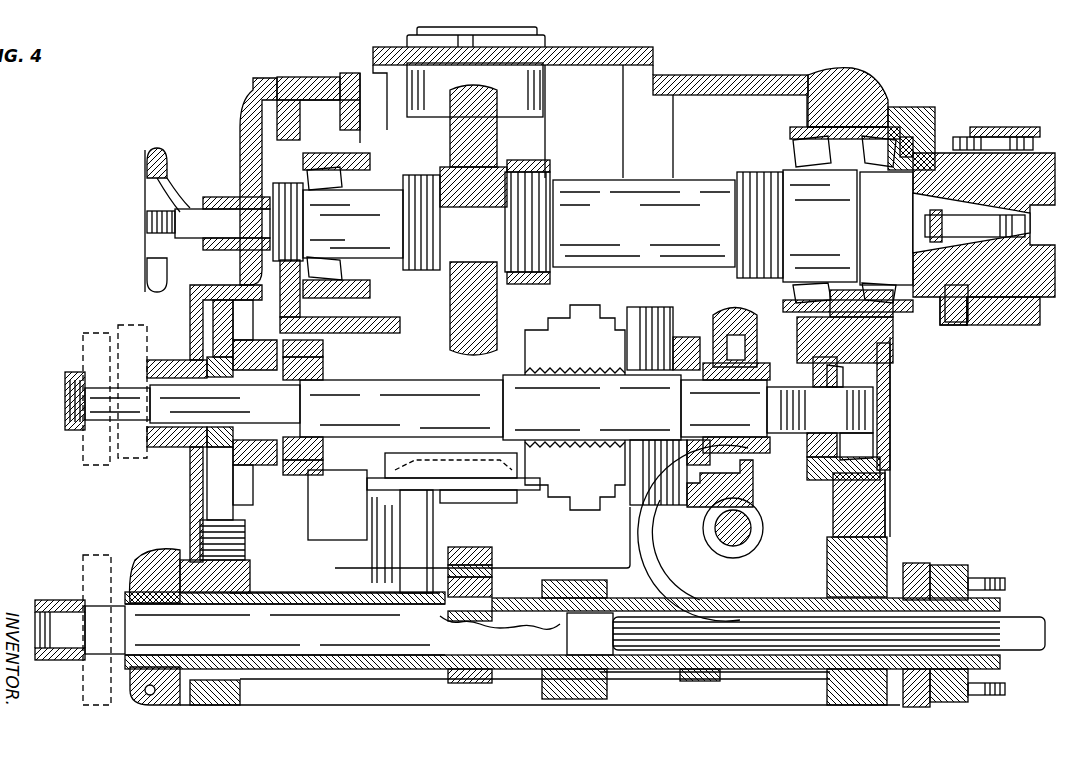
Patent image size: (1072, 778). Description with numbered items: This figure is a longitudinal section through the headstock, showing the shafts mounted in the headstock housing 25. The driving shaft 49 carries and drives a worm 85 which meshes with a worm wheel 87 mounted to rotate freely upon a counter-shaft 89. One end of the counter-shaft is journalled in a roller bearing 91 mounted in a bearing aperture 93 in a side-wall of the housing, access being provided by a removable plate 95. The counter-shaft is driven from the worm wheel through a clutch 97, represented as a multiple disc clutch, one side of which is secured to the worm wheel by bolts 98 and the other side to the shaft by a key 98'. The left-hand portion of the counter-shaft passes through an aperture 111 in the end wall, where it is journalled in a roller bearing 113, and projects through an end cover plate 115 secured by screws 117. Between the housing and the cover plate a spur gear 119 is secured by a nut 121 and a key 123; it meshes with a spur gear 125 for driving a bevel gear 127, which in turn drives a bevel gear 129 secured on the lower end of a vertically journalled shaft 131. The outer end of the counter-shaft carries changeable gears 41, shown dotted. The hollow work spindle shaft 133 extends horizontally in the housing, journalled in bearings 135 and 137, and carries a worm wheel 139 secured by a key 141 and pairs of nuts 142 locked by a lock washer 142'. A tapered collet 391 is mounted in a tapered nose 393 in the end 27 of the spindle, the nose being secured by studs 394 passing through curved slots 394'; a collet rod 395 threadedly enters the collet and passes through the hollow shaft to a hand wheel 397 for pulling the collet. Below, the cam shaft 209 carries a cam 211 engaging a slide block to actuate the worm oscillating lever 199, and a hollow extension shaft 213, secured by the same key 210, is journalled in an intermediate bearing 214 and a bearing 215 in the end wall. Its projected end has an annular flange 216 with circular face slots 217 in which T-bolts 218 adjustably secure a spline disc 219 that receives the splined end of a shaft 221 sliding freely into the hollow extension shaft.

The headstock housing 25 is at (345, 75).
The end of the spindle shaft 27 is at (975, 127).
The changeable gears 41 is at (80, 350).
The driving shaft 49 is at (754, 528).
The worm 85 is at (738, 553).
The worm wheel 87 is at (757, 330).
The counter-shaft 89 is at (622, 417).
The roller bearing 91 is at (843, 422).
The bearing aperture 93 is at (888, 462).
The removable plate 95 is at (888, 405).
The clutch 97 is at (672, 312).
The bolts 98 is at (741, 487).
The key 98' is at (575, 402).
The aperture 111 is at (322, 348).
The roller bearing 113 is at (300, 372).
The end cover plate 115 is at (192, 293).
The screws 117 is at (258, 88).
The spur gear 119 is at (207, 460).
The nut 121 is at (242, 352).
The key 123 is at (240, 365).
The spur gear 125 is at (240, 545).
The bevel gear 127 is at (425, 555).
The bevel gear 129 is at (438, 503).
The vertically journalled shaft 131 is at (488, 503).
The work spindle shaft 133 is at (612, 178).
The bearing 135 is at (845, 170).
The bearing 137 is at (395, 300).
The worm wheel 139 is at (497, 128).
The key 141 is at (455, 175).
The nuts 142 is at (423, 211).
The lock washer 142' is at (567, 296).
The worm oscillating lever 199 is at (492, 548).
The cam shaft 209 is at (353, 640).
The key 210 is at (452, 625).
The cam 211 is at (492, 683).
The hollow extension shaft 213 is at (492, 570).
The intermediate bearing 214 is at (607, 690).
The bearing 215 is at (820, 682).
The annular flange 216 is at (914, 705).
The circular face slots 217 is at (945, 580).
The T-bolts 218 is at (1005, 585).
The spline disc 219 is at (968, 705).
The shaft 221 is at (1048, 632).
The tapered collet 391 is at (948, 300).
The tapered nose 393 is at (1052, 150).
The studs 394 is at (990, 114).
The curved slots 394' is at (1012, 329).
The collet rod 395 is at (180, 205).
The hand wheel 397 is at (147, 158).